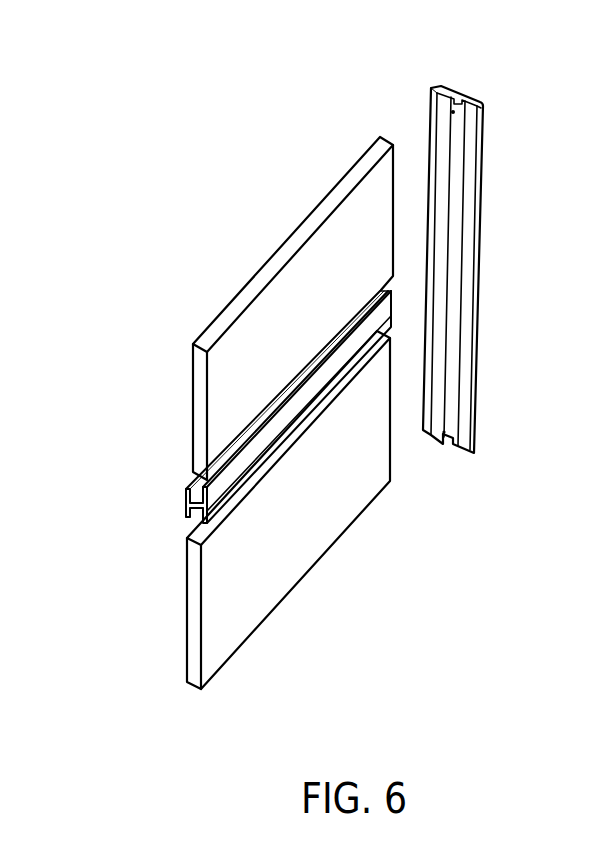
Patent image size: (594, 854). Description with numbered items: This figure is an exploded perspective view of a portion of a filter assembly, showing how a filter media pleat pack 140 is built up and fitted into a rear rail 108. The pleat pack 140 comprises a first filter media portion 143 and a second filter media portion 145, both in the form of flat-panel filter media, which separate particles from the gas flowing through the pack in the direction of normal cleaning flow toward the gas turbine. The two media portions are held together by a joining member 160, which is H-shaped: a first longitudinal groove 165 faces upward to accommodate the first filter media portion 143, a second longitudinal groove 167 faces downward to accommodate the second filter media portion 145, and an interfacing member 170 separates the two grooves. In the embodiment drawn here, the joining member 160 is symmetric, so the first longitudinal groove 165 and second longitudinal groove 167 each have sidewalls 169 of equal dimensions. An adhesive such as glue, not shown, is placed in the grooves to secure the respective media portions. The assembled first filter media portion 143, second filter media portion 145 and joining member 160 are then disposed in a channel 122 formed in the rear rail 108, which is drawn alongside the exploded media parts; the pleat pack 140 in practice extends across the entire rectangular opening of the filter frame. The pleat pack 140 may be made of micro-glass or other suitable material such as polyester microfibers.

The rear rail 108 is at (453, 244).
The channel 122 is at (440, 103).
The filter media pleat pack 140 is at (245, 510).
The first filter media portion 143 is at (222, 395).
The second filter media portion 145 is at (280, 577).
The joining member 160 is at (243, 438).
The first longitudinal groove 165 is at (198, 490).
The second longitudinal groove 167 is at (195, 520).
The sidewalls 169 is at (220, 483).
The interfacing member 170 is at (192, 512).